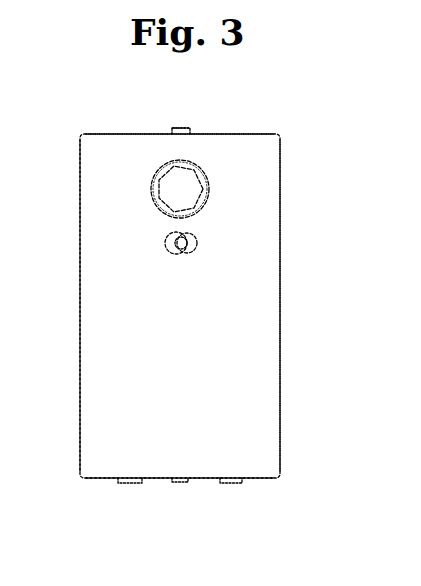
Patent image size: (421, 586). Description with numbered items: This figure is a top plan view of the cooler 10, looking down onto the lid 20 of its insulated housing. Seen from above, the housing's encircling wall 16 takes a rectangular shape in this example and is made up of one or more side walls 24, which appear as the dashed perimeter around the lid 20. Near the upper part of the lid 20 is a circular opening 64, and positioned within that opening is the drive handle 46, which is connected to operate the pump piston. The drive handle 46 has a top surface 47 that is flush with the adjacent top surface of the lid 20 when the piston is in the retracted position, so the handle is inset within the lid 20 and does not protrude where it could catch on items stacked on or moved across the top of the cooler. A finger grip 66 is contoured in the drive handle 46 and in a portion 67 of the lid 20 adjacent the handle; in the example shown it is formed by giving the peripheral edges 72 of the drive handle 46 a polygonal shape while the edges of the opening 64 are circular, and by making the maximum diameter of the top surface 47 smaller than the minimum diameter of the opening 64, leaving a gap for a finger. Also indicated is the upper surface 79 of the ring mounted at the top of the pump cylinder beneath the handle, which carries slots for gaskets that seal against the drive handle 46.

The cooler 10 is at (191, 301).
The encircling wall 16 is at (283, 303).
The lid 20 is at (202, 390).
The side walls 24 is at (222, 123).
The drive handle 46 is at (193, 207).
The top surface 47 is at (175, 190).
The circular opening 64 is at (212, 194).
The finger grip 66 is at (155, 201).
The portion of the lid 67 is at (203, 173).
The peripheral edges 72 is at (167, 172).
The upper surface 79 is at (163, 210).